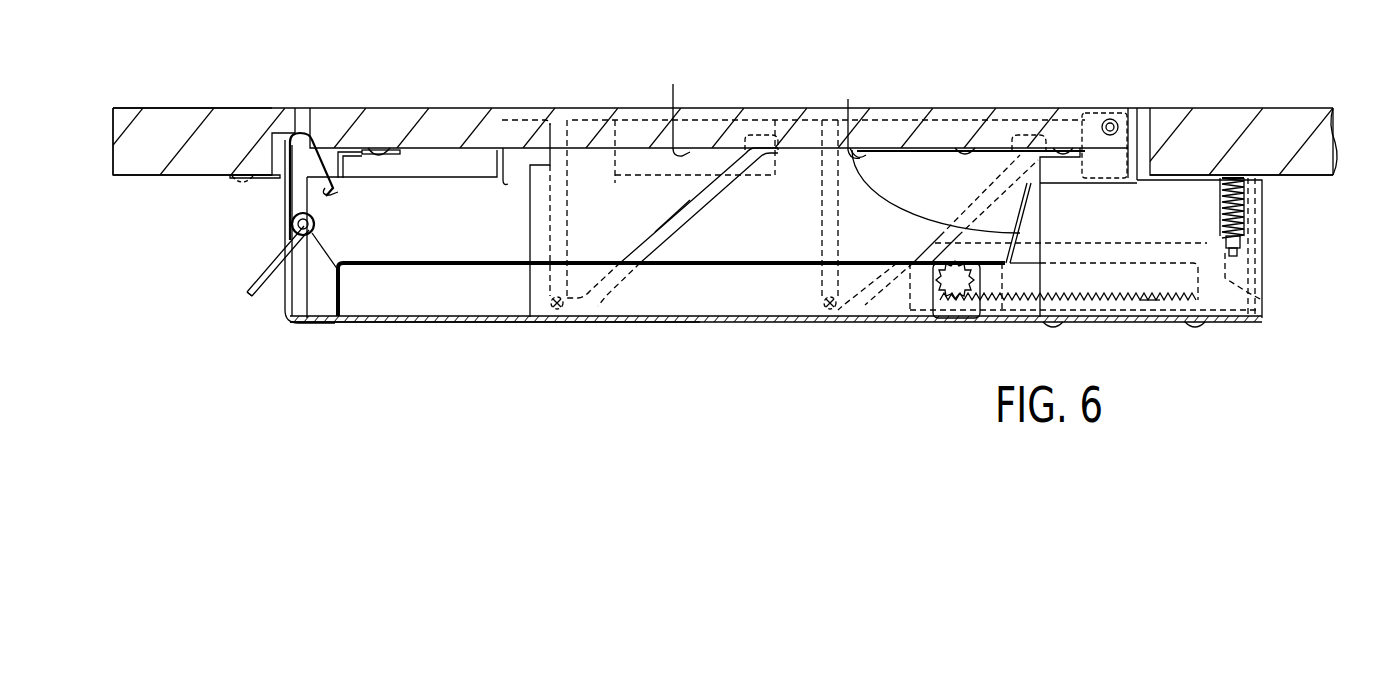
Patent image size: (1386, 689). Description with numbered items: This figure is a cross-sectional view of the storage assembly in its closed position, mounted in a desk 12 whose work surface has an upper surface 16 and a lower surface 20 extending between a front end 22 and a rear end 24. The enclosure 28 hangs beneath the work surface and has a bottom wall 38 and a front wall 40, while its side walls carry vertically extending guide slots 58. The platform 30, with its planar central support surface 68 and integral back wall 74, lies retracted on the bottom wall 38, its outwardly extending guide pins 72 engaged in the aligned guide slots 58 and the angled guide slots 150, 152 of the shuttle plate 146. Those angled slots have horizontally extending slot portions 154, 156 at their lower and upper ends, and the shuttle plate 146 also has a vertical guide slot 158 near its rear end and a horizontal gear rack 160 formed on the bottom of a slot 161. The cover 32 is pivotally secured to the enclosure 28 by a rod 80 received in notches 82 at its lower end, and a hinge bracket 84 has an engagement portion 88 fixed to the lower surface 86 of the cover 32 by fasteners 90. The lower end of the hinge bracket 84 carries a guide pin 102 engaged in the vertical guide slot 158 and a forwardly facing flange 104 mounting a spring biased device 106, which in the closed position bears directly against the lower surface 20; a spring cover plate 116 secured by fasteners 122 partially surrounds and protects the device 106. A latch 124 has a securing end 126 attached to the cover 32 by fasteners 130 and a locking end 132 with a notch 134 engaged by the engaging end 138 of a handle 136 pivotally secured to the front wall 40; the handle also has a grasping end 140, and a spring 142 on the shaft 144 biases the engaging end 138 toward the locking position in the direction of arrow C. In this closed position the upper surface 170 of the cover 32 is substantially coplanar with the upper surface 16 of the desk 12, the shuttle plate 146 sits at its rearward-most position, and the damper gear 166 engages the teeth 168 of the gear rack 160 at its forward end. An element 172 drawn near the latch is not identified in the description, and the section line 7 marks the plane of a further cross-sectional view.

The desk 12 is at (202, 104).
The upper surface 16 is at (158, 108).
The lower surface 20 is at (133, 176).
The front end 22 is at (113, 148).
The rear end 24 is at (1333, 143).
The enclosure 28 is at (416, 326).
The platform 30 is at (419, 259).
The cover 32 is at (590, 104).
The bottom wall 38 is at (703, 323).
The front wall 40 is at (288, 300).
The guide slots 58 is at (572, 218).
The support surface 68 is at (732, 262).
The guide pins 72 is at (552, 318).
The back wall 74 is at (1030, 203).
The rod 80 is at (1108, 118).
The notches 82 is at (1128, 130).
The hinge brackets 84 is at (939, 198).
The lower surface 86 is at (594, 143).
The engagement portion 88 is at (912, 149).
The fasteners 90 is at (848, 116).
The guide pin 102 is at (1222, 200).
The flange 104 is at (1247, 238).
The spring biased device 106 is at (1253, 222).
The spring cover plates 116 is at (1243, 310).
The fasteners 122 is at (1050, 326).
The latch 124 is at (402, 140).
The securing end 126 is at (392, 136).
The fasteners 130 is at (392, 154).
The locking end 132 is at (345, 166).
The notch 134 is at (338, 190).
The handle 136 is at (246, 271).
The engaging end 138 is at (334, 150).
The grasping end 140 is at (260, 285).
The spring 142 is at (313, 230).
The shaft 144 is at (341, 283).
The shuttle plate 146 is at (525, 236).
The angled guide slot 150 is at (664, 243).
The angled guide slot 152 is at (912, 238).
The slot portion 154 is at (595, 318).
The slot portion 156 is at (742, 132).
The vertical guide slot 158 is at (1262, 300).
The gear rack 160 is at (1143, 288).
The slot 161 is at (1030, 262).
The gear 166 is at (955, 283).
The teeth 168 is at (1150, 295).
The upper surface 170 is at (512, 120).
The spring wire 172 is at (315, 133).
The arrow C is at (249, 206).
The section line 7 is at (237, 262).